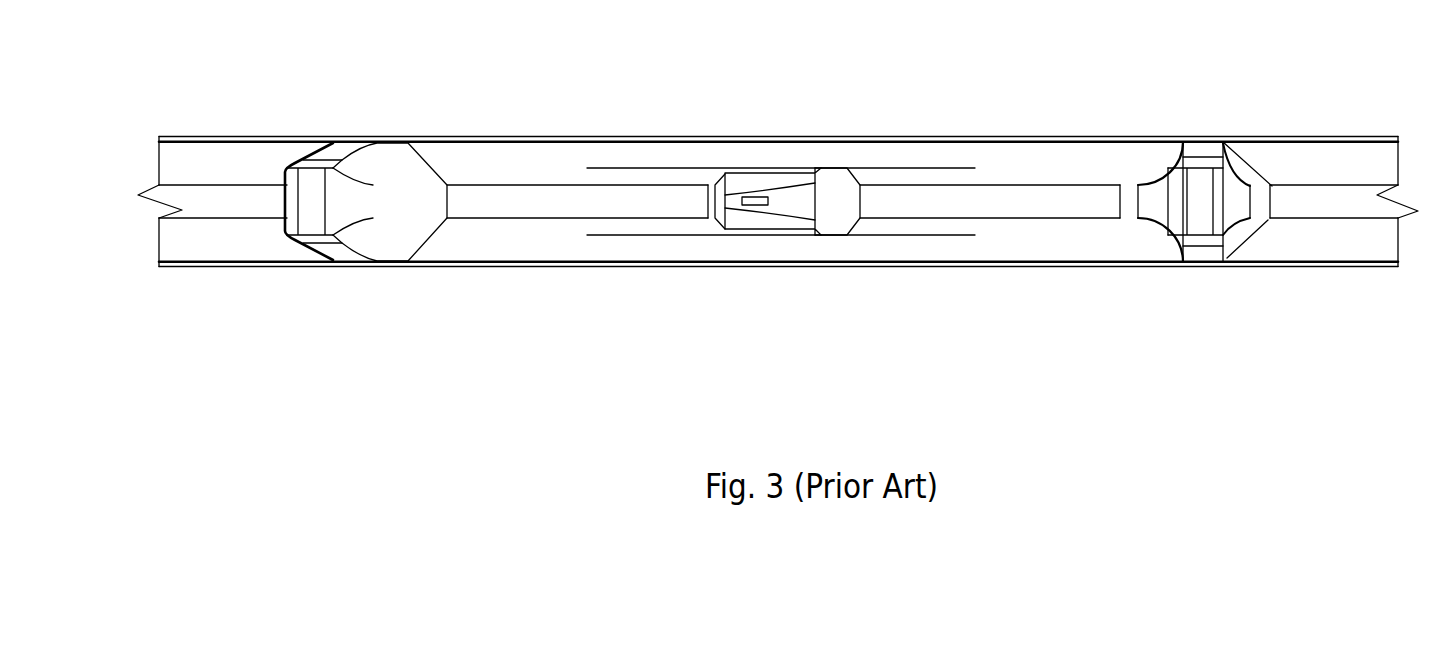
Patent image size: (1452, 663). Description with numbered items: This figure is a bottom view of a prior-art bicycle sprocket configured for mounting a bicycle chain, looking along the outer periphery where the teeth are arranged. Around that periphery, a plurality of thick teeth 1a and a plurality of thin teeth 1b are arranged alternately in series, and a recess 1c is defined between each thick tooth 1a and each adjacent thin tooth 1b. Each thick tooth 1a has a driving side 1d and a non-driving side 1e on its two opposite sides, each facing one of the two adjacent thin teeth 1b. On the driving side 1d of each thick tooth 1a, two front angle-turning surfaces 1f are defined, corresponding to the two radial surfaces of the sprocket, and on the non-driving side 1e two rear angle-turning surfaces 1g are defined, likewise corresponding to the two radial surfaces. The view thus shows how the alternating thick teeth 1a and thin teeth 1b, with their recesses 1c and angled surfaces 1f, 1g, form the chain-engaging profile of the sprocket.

The thick tooth 1a is at (1212, 132).
The thin tooth 1b is at (755, 160).
The recess 1c is at (1050, 202).
The driving side 1d is at (1153, 203).
The non-driving side 1e is at (1260, 203).
The front angle-turning surface 1f is at (1168, 168).
The rear angle-turning surface 1g is at (1238, 175).